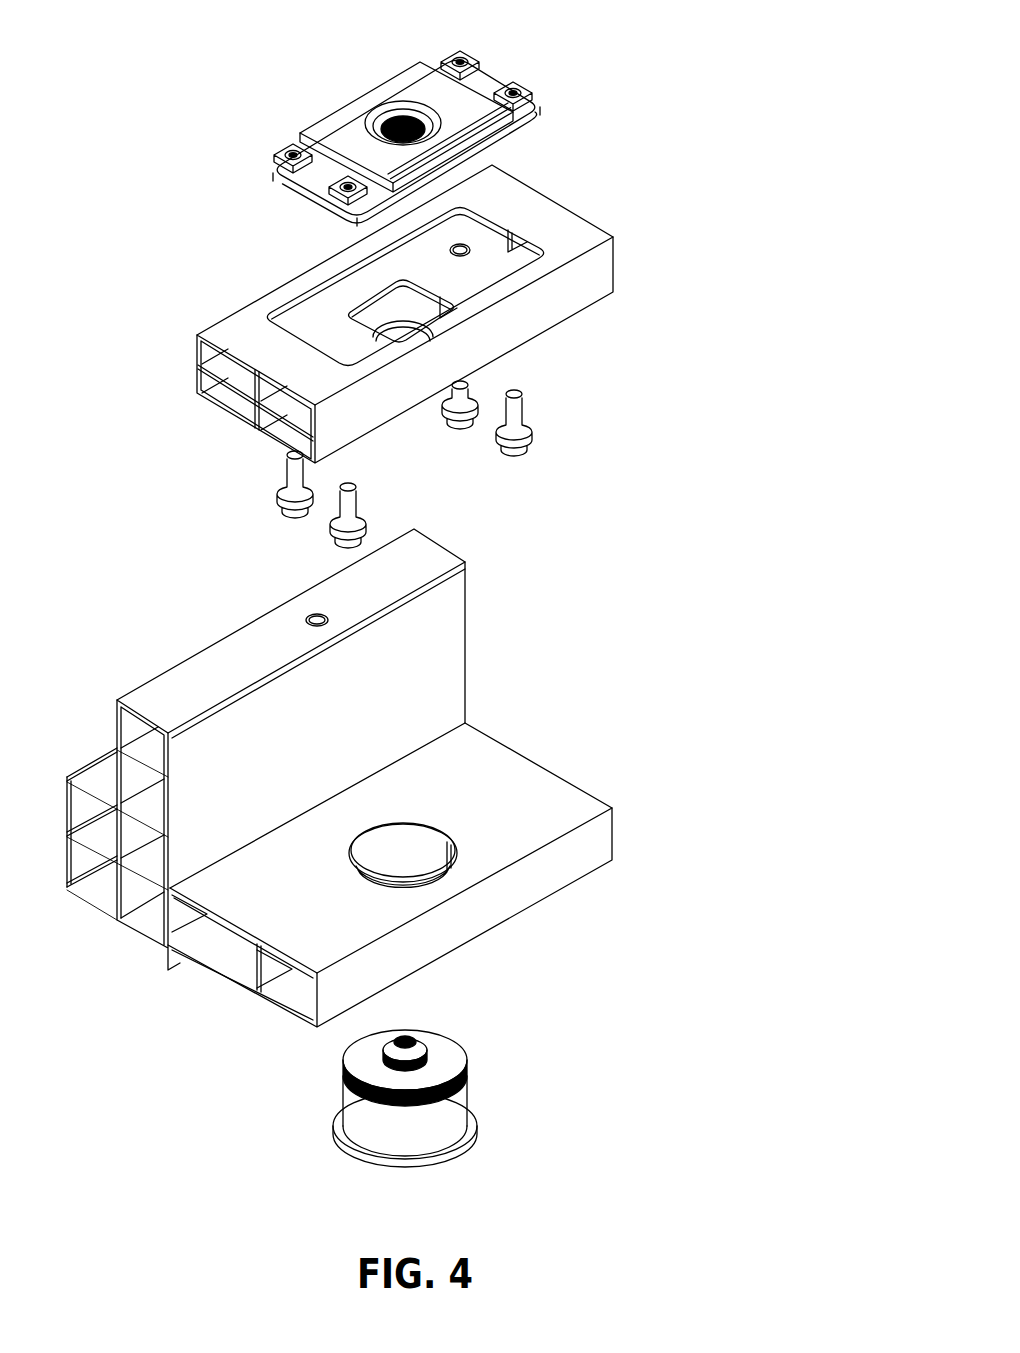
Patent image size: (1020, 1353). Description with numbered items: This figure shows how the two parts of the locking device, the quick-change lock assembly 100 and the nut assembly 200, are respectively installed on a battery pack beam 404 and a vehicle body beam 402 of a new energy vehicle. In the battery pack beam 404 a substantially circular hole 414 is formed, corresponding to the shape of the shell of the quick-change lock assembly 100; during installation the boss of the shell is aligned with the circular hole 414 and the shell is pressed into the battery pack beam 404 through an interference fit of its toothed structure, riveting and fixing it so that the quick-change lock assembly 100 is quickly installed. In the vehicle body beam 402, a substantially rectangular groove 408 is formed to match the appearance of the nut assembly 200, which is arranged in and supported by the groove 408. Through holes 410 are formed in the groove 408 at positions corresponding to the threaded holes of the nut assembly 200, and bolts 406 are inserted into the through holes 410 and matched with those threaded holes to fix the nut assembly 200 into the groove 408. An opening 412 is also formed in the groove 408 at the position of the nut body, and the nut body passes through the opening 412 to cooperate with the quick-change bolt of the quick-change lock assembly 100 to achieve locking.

The quick-change lock assembly 100 is at (521, 1081).
The nut assembly 200 is at (603, 80).
The vehicle body beam 402 is at (470, 322).
The battery pack beam 404 is at (433, 778).
The bolts 406 is at (526, 411).
The groove 408 is at (316, 331).
The through holes 410 is at (462, 249).
The opening 412 is at (404, 340).
The circular hole 414 is at (404, 849).